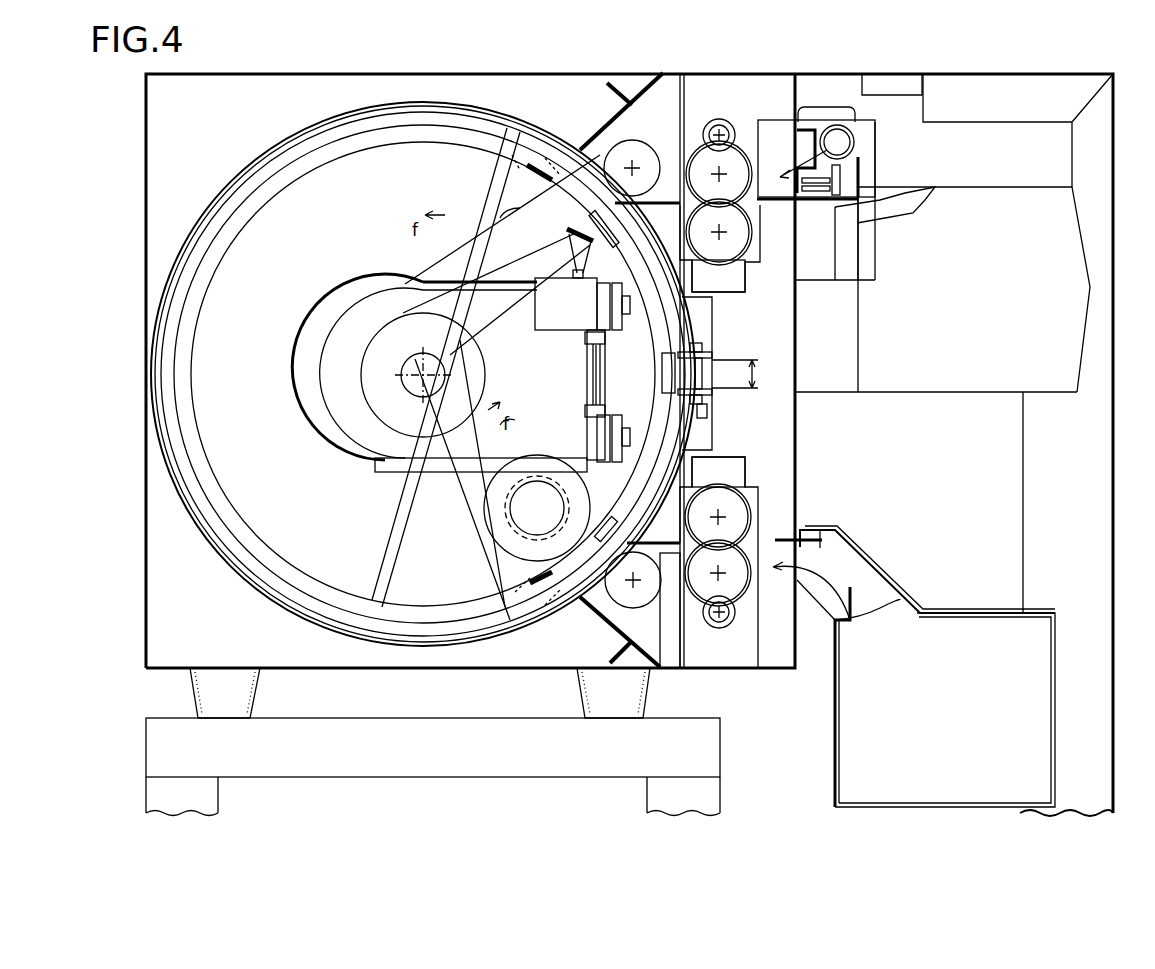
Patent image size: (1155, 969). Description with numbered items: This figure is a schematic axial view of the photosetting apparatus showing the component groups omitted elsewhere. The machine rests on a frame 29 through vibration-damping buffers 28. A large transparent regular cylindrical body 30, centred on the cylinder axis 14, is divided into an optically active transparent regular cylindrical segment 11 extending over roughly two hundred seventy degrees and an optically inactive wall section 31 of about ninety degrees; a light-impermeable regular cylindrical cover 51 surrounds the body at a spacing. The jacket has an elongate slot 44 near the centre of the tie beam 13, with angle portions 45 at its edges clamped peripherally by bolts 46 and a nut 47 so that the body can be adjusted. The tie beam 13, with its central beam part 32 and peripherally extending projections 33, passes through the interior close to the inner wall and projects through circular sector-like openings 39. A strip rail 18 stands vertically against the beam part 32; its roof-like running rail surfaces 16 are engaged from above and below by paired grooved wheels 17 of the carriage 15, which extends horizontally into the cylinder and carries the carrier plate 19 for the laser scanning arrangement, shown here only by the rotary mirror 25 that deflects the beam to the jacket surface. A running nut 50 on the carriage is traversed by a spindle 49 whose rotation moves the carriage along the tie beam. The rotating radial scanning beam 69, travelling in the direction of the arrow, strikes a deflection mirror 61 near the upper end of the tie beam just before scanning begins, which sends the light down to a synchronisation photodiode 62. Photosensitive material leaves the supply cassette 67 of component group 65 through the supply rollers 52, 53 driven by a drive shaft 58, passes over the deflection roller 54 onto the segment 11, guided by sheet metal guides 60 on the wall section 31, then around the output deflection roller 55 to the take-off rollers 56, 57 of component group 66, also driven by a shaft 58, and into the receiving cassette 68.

The regular cylindrical segment 11 is at (190, 322).
The tie beam 13 is at (692, 318).
The cylinder axis 14 is at (412, 385).
The carriage 15 is at (462, 488).
The running rail surfaces 16 is at (588, 338).
The wheels 17 is at (600, 315).
The strip rail 18 is at (590, 378).
The carrier plate 19 is at (378, 470).
The rotary mirror 25 is at (400, 365).
The buffers 28 is at (245, 695).
The frame 29 is at (452, 722).
The regular cylindrical body 30 is at (331, 153).
The optically inactive wall section 31 is at (662, 373).
The beam part 32 is at (598, 358).
The projections 33 is at (565, 238).
The circular sector-like openings 39 is at (413, 283).
The elongate slot 44 is at (751, 366).
The angle portions 45 is at (712, 355).
The bolts 46 is at (712, 375).
The nut 47 is at (707, 420).
The spindle 49 is at (510, 510).
The running nut 50 is at (485, 545).
The regular cylindrical cover 51 is at (470, 104).
The supply roller 52 is at (745, 575).
The supply roller 53 is at (745, 512).
The deflection roller 54 is at (610, 590).
The output deflection roller 55 is at (640, 145).
The take-off roller 56 is at (738, 165).
The take-off roller 57 is at (745, 228).
The drive shaft 58 is at (719, 122).
The sheet metal guides 60 is at (745, 282).
The deflection mirror 61 is at (568, 228).
The synchronisation photodiode 62 is at (577, 278).
The component group 65 is at (837, 558).
The component group 66 is at (858, 148).
The supply cassette 67 is at (958, 701).
The receiving cassette 68 is at (978, 296).
The radial scanning beam 69 is at (505, 190).